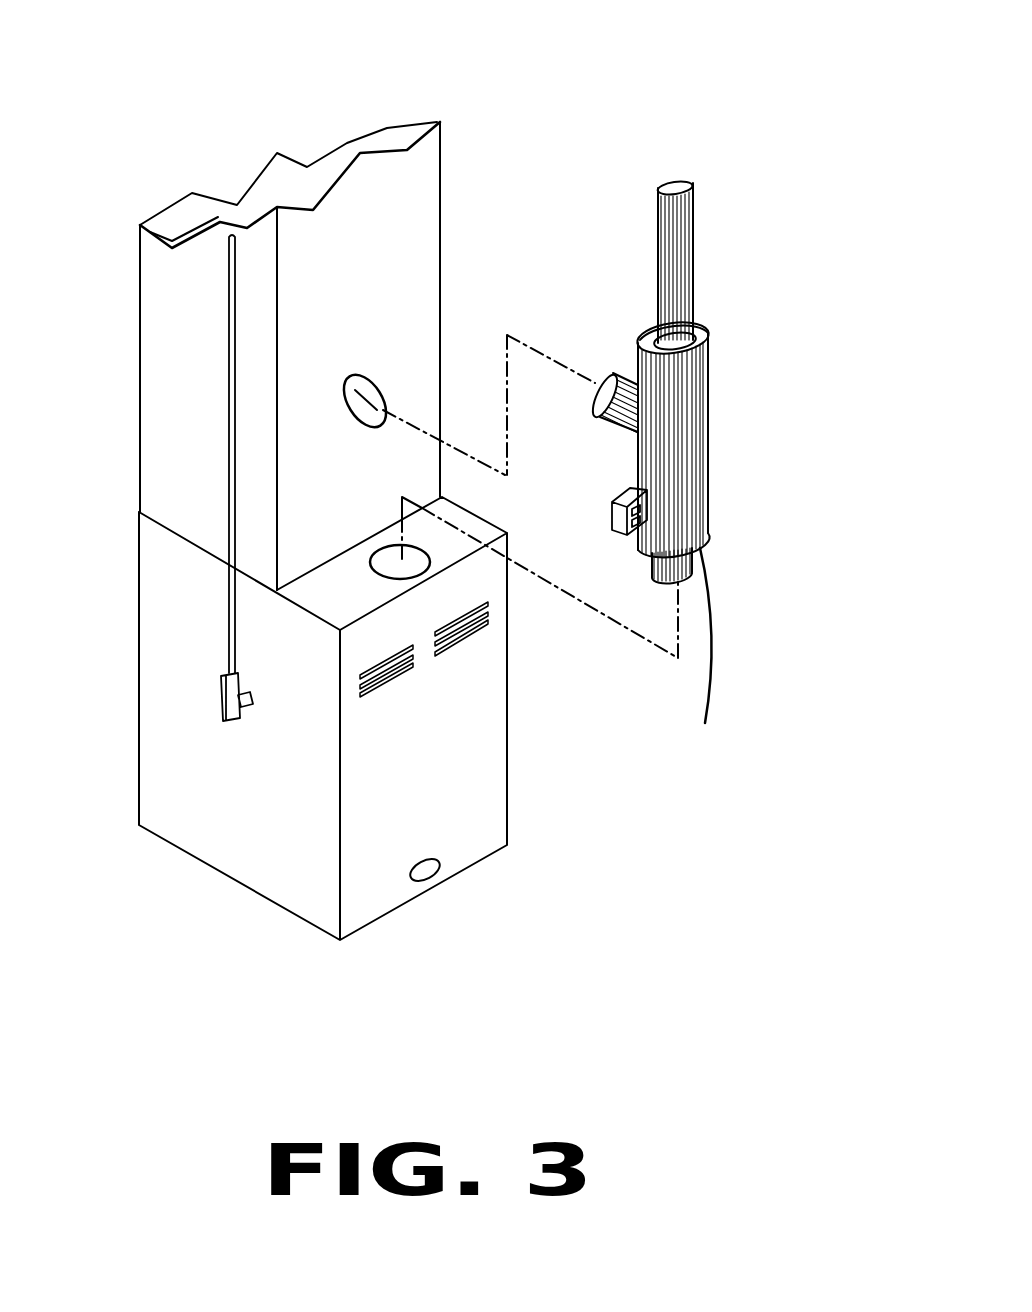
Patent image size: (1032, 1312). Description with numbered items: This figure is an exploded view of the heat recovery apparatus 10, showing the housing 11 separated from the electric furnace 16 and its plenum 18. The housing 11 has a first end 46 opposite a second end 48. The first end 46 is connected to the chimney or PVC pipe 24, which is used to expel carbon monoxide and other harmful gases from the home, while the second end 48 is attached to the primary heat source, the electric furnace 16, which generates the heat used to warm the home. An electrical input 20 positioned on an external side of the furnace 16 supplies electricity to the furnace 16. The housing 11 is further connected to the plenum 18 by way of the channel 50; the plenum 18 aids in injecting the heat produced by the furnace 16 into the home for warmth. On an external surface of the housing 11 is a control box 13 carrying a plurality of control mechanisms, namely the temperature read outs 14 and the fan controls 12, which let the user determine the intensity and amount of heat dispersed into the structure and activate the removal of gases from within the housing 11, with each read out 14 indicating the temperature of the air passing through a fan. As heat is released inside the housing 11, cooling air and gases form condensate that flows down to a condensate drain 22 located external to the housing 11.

The heat recovery apparatus 10 is at (812, 183).
The housing 11 is at (707, 382).
The fan controls 12 is at (632, 523).
The control box 13 is at (613, 510).
The temperature read outs 14 is at (638, 503).
The primary heat source (electric furnace) 16 is at (482, 825).
The plenum 18 is at (440, 180).
The electrical input 20 is at (222, 697).
The condensate drain 22 is at (710, 693).
The chimney or PVC pipe 24 is at (693, 195).
The first end 46 is at (708, 318).
The second end 48 is at (660, 580).
The channel 50 is at (614, 374).